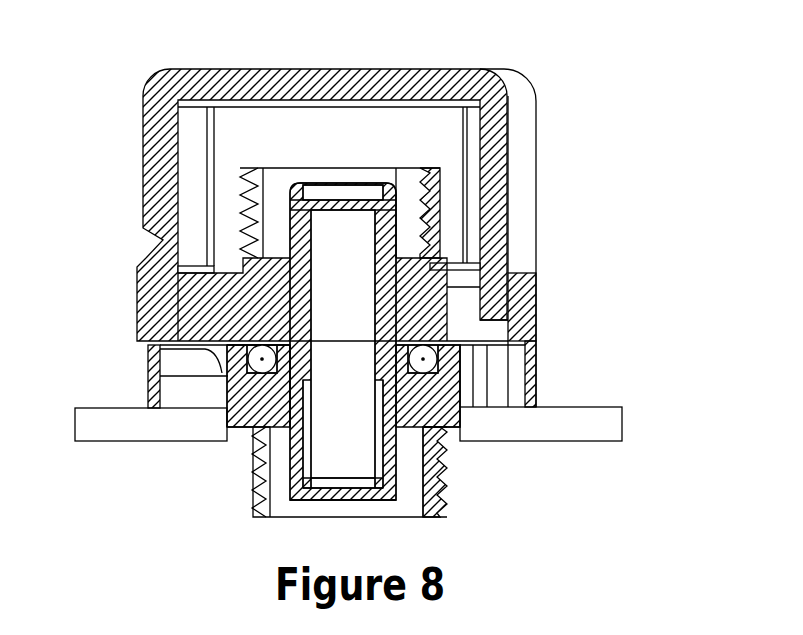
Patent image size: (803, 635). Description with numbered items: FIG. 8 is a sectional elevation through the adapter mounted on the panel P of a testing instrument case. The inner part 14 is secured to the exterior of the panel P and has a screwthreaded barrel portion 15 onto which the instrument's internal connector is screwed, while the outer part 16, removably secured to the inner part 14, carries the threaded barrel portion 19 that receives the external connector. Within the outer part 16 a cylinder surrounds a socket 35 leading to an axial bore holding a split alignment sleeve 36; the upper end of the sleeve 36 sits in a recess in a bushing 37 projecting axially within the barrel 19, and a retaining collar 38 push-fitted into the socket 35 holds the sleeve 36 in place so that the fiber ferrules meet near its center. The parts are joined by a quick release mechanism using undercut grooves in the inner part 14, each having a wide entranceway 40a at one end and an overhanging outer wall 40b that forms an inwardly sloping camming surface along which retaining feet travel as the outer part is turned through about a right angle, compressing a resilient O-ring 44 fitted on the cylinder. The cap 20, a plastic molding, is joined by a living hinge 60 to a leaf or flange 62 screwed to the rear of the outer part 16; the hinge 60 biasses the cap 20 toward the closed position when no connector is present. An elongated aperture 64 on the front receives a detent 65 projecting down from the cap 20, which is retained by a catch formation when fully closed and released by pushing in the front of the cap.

The inner part 14 is at (538, 389).
The screwthreaded barrel portion 15 is at (445, 497).
The outer part 16 is at (537, 330).
The threaded barrel portion 19 is at (423, 172).
The cap 20 is at (379, 148).
The socket 35 is at (437, 422).
The split alignment sleeve 36 is at (368, 318).
The bushing 37 is at (507, 73).
The retaining collar 38 is at (402, 497).
The entranceway 40a is at (172, 408).
The overhanging outer wall 40b is at (187, 363).
The O-ring 44 is at (245, 410).
The living hinge 60 is at (160, 237).
The flange 62 is at (140, 296).
The elongated aperture 64 is at (500, 330).
The detent 65 is at (520, 292).
The panel P is at (612, 437).